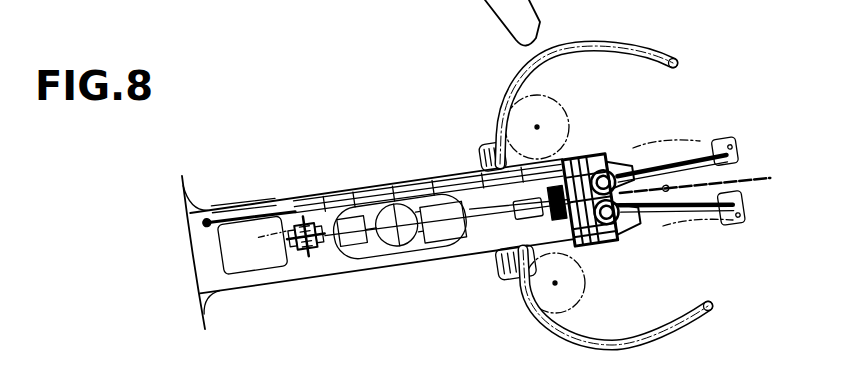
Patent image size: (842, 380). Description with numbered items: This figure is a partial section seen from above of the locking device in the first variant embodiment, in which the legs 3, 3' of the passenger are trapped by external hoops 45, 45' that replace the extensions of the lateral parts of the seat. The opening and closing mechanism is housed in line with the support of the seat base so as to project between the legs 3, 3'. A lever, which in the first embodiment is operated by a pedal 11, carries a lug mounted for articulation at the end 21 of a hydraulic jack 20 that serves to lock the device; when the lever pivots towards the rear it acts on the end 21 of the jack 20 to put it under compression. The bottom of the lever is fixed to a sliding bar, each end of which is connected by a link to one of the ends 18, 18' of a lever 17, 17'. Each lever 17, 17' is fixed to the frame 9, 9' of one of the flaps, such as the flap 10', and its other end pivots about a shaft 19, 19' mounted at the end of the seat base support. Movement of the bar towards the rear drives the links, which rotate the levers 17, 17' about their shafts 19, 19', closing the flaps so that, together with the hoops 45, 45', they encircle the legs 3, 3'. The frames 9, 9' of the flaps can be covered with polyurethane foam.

The leg 3 is at (519, 124).
The leg 3' is at (541, 300).
The frame 9 is at (676, 138).
The frame 9' is at (732, 233).
The flap 10' is at (703, 218).
The pedal 11 is at (740, 178).
The lever 17 is at (654, 141).
The lever 17' is at (661, 238).
The end of lever 18 is at (619, 145).
The end of lever 18' is at (627, 238).
The shaft 19 is at (589, 170).
The shaft 19' is at (595, 254).
The hydraulic jack 20 is at (442, 227).
The end of hydraulic jack 21 is at (510, 230).
The external hoop 45 is at (624, 101).
The external hoop 45' is at (654, 297).